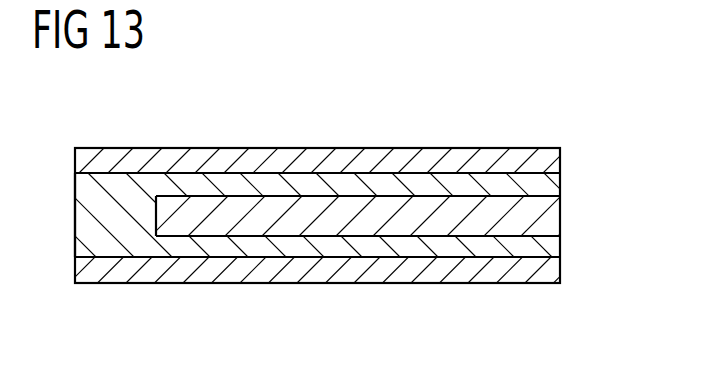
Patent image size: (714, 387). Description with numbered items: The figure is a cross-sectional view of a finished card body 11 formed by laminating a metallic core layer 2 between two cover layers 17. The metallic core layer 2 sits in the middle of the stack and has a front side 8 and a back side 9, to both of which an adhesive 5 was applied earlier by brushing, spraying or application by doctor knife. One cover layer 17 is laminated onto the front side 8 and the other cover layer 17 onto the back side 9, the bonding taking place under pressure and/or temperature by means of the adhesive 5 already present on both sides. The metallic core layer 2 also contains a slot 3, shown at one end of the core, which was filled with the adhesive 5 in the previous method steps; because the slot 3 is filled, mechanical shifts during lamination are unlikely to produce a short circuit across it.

The card body 11 is at (92, 112).
The cover layer 17 is at (560, 158).
The adhesive 5 is at (560, 187).
The metallic core layer 2 is at (553, 217).
The front side 8 is at (485, 197).
The back side 9 is at (475, 237).
The slot 3 is at (78, 211).